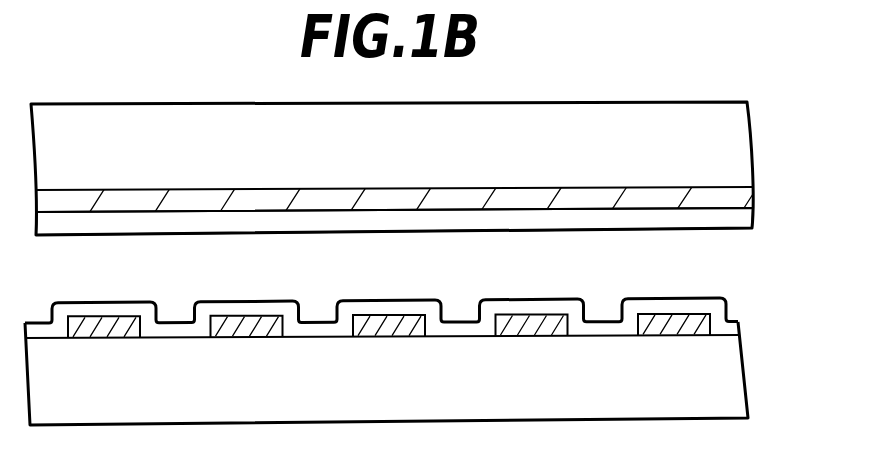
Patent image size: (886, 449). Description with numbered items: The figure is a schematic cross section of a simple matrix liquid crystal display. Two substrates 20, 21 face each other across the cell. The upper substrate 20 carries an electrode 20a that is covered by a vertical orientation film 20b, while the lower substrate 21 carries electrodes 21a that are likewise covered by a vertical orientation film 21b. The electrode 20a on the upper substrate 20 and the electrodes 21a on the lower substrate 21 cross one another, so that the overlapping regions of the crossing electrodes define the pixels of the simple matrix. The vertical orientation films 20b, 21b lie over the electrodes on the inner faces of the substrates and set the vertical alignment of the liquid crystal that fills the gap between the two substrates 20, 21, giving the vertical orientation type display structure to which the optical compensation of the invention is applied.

The substrate 20 is at (733, 157).
The electrode 20a is at (733, 198).
The vertical orientation film 20b is at (731, 222).
The substrate 21 is at (733, 387).
The electrode 21a is at (703, 327).
The vertical orientation film 21b is at (718, 312).